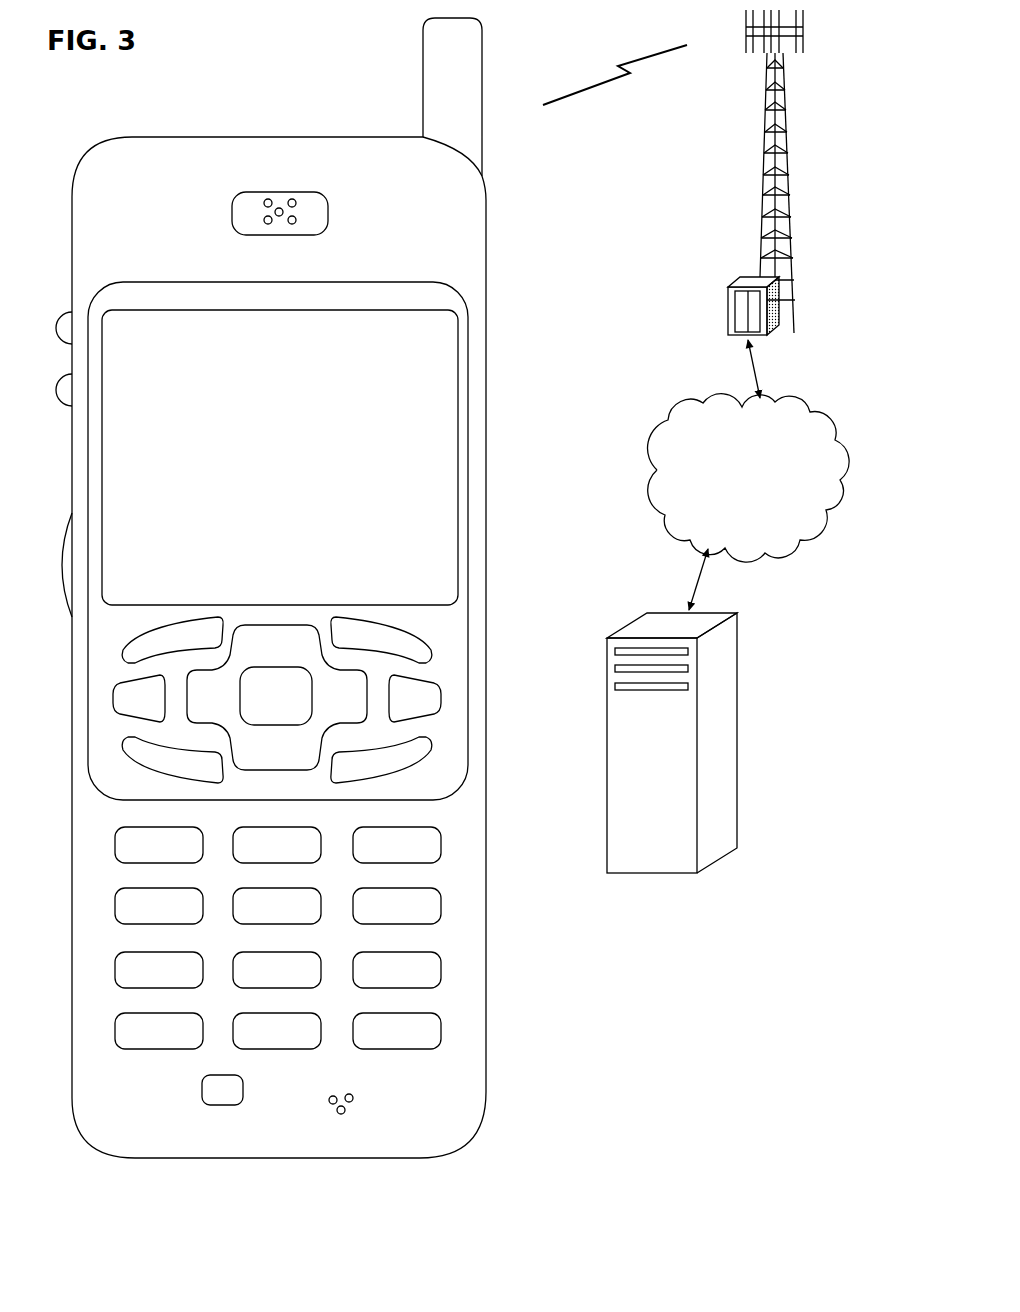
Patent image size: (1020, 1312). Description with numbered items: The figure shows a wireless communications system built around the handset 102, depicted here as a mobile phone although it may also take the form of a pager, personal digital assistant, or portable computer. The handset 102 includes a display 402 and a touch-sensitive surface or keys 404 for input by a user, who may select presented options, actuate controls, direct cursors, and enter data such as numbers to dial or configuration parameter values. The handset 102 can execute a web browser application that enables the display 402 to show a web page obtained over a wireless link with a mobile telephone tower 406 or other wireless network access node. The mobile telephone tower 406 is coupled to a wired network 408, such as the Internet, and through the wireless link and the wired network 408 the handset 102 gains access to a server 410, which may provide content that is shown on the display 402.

The handset 102 is at (127, 1158).
The display 402 is at (468, 321).
The keys 404 is at (494, 998).
The mobile telephone tower 406 is at (758, 188).
The wired network 408 is at (668, 527).
The server 410 is at (654, 875).